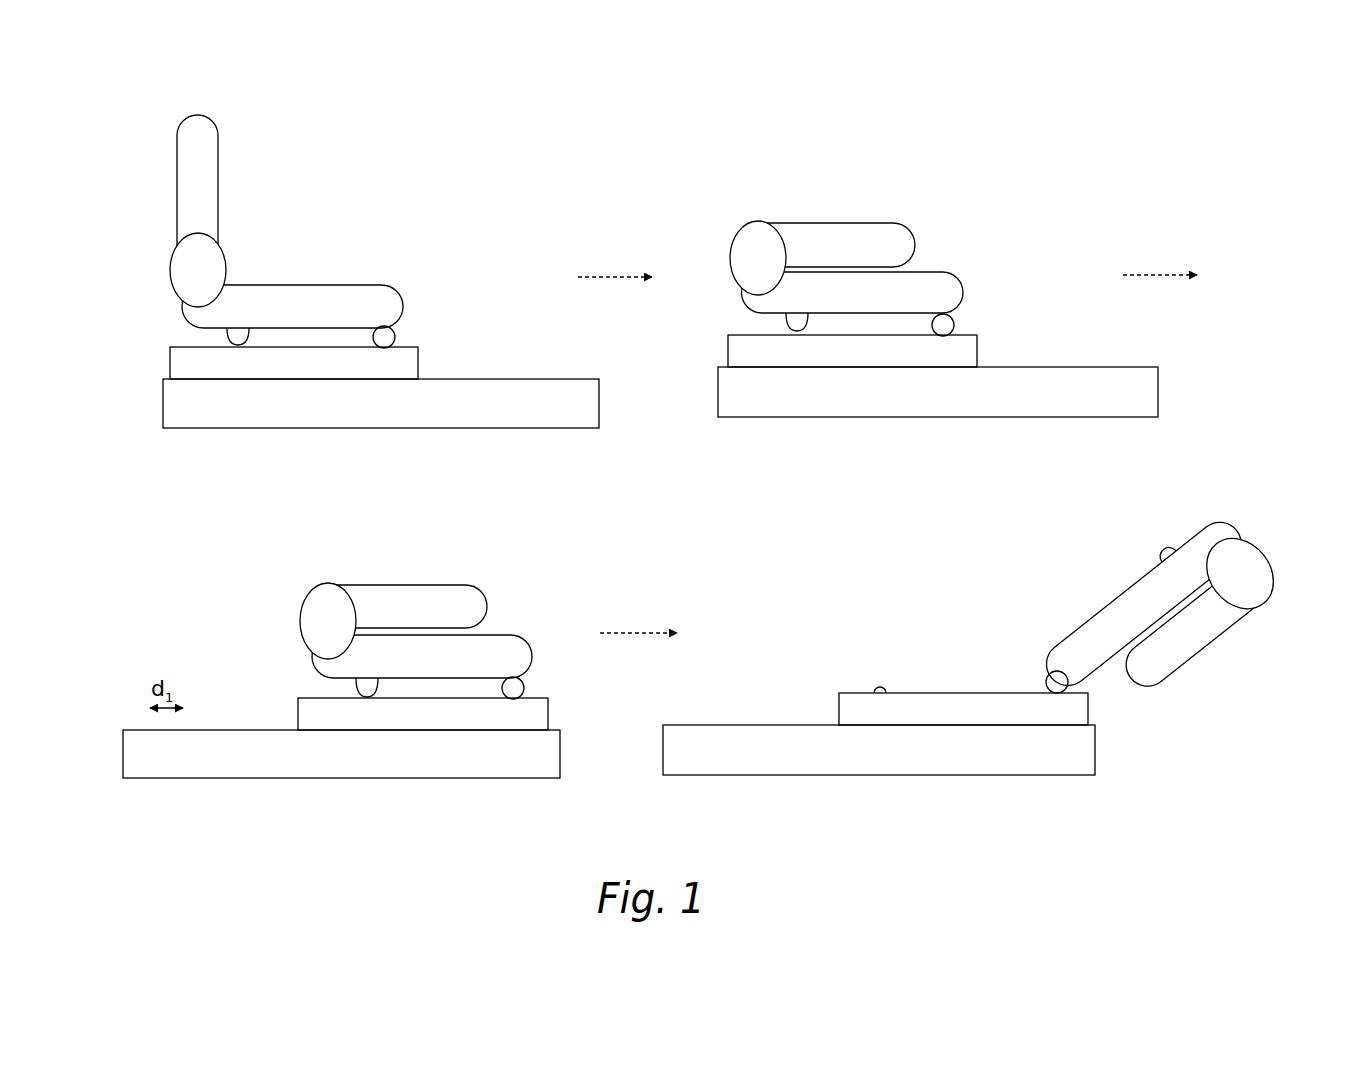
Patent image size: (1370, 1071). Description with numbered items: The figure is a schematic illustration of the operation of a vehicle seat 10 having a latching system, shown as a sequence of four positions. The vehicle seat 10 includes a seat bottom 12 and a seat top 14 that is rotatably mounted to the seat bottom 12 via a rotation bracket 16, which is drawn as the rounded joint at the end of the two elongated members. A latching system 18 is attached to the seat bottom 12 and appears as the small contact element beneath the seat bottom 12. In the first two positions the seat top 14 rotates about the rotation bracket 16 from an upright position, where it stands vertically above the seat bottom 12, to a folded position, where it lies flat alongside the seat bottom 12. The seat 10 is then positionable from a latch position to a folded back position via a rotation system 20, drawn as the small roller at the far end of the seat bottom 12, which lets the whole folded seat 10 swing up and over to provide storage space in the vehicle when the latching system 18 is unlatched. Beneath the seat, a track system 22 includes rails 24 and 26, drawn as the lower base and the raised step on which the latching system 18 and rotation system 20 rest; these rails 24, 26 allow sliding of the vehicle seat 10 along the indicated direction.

The vehicle seat 10 is at (350, 158).
The seat bottom 12 is at (340, 286).
The seat top 14 is at (177, 158).
The rotation bracket 16 is at (178, 270).
The latching system 18 is at (208, 336).
The rotation system 20 is at (393, 330).
The track system 22 is at (128, 440).
The rail 24 is at (163, 405).
The rail 26 is at (418, 358).